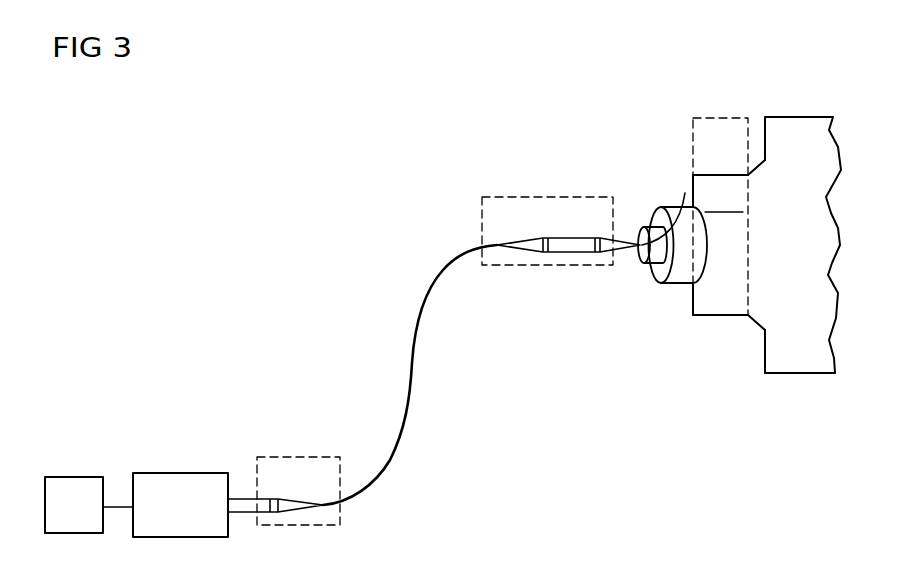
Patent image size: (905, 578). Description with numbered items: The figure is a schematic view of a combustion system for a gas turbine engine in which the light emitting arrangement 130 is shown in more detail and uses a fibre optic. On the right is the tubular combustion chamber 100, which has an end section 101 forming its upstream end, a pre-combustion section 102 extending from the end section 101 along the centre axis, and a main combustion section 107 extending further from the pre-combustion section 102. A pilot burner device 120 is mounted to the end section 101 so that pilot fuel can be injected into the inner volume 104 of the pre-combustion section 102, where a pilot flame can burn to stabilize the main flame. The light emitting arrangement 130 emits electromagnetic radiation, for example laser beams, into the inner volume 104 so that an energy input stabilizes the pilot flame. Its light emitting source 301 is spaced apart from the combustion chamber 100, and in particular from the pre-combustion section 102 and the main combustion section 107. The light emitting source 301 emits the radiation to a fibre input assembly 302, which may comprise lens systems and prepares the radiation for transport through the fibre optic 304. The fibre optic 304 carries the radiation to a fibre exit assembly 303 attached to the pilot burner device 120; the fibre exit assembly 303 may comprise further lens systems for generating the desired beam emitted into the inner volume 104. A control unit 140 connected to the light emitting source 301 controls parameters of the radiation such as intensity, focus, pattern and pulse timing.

The combustion chamber 100 is at (760, 91).
The end section 101 is at (693, 183).
The pre-combustion section 102 is at (748, 117).
The inner volume 104 is at (692, 214).
The main combustion section 107 is at (810, 117).
The pilot burner device 120 is at (680, 276).
The light emitting arrangement 130 is at (352, 186).
The control unit 140 is at (72, 477).
The light emitting source 301 is at (180, 473).
The fibre input assembly 302 is at (302, 455).
The fibre exit assembly 303 is at (545, 207).
The fibre optic 304 is at (412, 360).